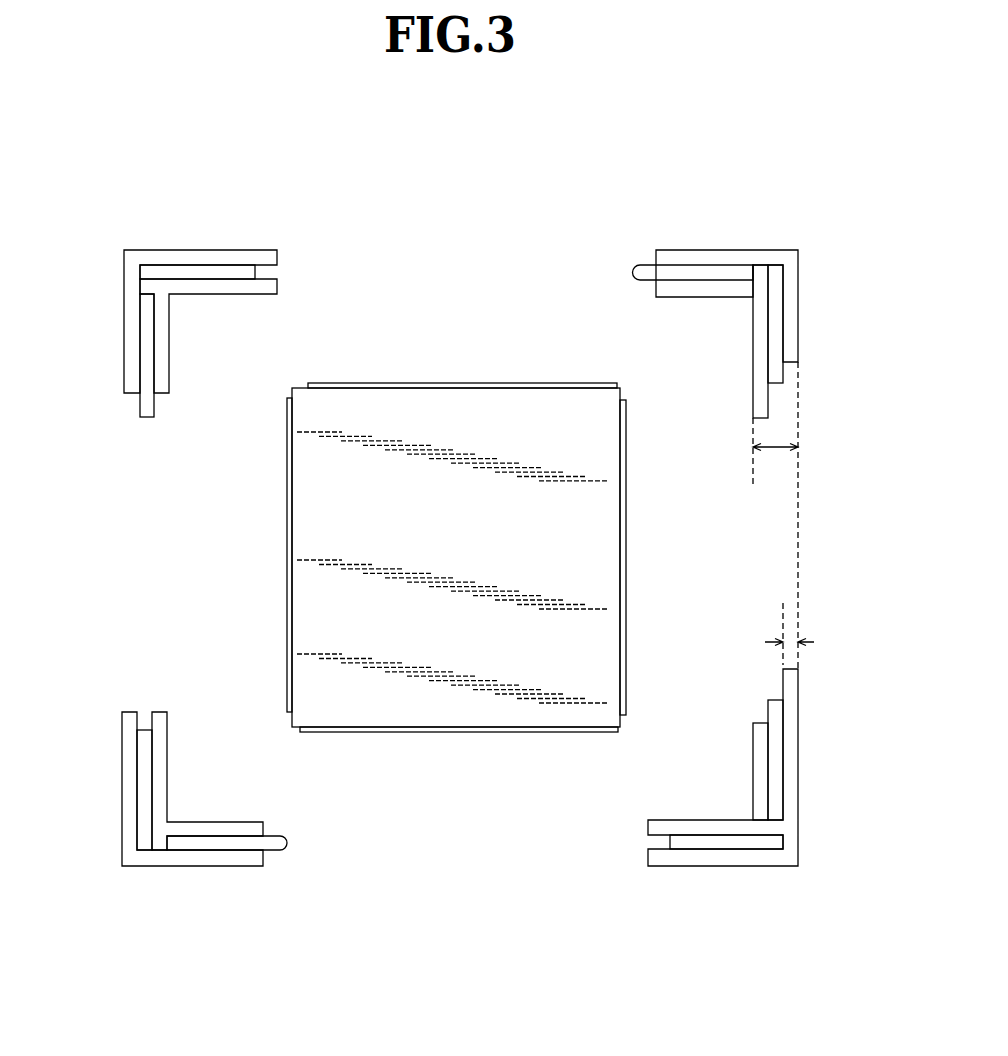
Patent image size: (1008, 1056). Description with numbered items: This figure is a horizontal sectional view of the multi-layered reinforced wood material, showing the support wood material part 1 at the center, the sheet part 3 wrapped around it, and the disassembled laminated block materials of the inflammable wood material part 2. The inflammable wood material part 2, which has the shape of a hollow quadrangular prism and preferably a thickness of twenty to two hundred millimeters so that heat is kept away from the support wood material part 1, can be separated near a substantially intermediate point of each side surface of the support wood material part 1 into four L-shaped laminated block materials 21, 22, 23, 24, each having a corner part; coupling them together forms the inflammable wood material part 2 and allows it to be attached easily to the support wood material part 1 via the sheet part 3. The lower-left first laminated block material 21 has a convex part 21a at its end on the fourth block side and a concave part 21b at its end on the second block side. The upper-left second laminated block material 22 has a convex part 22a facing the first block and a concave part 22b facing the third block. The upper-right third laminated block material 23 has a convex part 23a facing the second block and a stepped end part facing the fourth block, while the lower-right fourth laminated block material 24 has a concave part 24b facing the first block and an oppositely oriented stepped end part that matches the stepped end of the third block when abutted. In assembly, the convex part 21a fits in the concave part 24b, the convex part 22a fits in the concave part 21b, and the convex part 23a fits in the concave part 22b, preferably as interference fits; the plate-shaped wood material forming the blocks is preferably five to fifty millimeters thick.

The support wood material part 1 is at (456, 557).
The inflammable wood material part 2 is at (823, 334).
The sheet part 3 is at (352, 382).
The first laminated block material 21 is at (192, 777).
The convex part 21a is at (287, 846).
The concave part 21b is at (142, 727).
The second laminated block material 22 is at (208, 303).
The convex part 22a is at (143, 418).
The concave part 22b is at (263, 272).
The third laminated block material 23 is at (691, 304).
The convex part 23a is at (633, 270).
The fourth laminated block material 24 is at (716, 770).
The concave part 24b is at (670, 843).